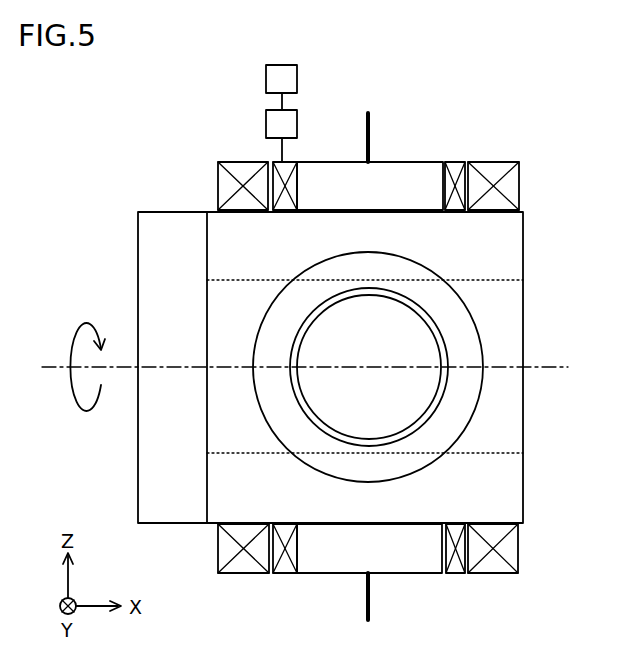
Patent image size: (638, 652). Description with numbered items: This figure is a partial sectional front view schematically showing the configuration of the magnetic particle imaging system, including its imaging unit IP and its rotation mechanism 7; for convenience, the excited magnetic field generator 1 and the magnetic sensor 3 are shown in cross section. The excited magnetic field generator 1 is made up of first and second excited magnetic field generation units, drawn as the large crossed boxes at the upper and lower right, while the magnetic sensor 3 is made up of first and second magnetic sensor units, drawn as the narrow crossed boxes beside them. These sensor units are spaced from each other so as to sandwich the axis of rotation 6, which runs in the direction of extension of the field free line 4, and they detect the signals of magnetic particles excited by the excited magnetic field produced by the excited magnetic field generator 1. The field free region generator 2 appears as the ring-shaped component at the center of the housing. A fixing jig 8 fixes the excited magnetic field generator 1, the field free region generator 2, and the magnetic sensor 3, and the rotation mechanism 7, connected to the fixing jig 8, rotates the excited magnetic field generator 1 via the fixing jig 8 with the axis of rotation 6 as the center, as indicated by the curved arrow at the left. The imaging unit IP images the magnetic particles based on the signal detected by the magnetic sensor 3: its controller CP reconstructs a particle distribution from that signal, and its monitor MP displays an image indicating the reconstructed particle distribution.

The excited magnetic field generator 1 is at (510, 162).
The field free region generator 2 is at (476, 316).
The magnetic sensor 3 is at (452, 162).
The field free line 4 is at (366, 600).
The axis of rotation 6 is at (546, 367).
The rotation mechanism 7 is at (170, 211).
The fixing jig 8 is at (332, 162).
The imaging unit IP is at (232, 113).
The monitor MP is at (265, 80).
The controller CP is at (253, 124).